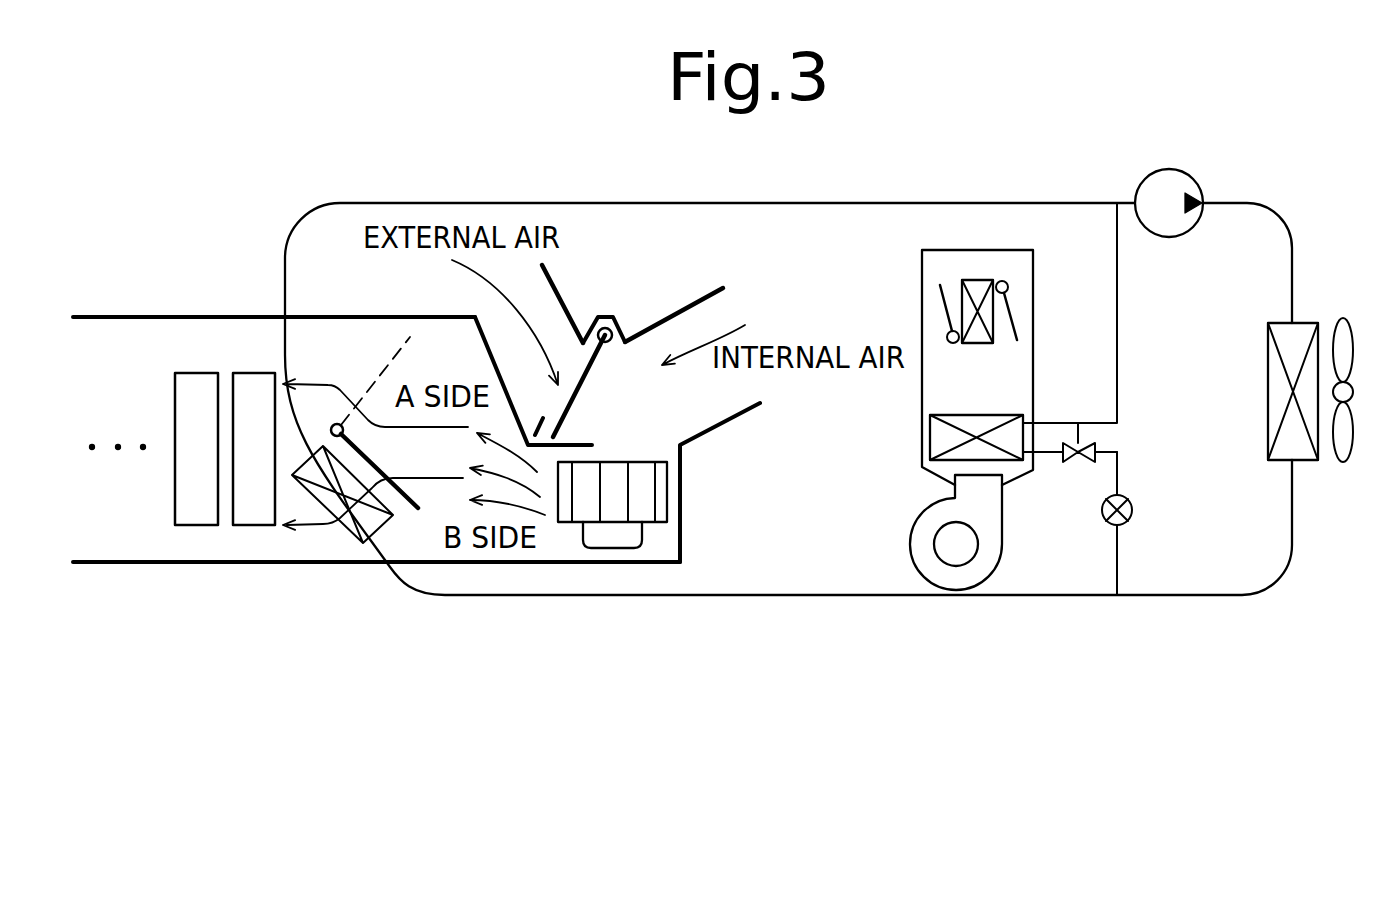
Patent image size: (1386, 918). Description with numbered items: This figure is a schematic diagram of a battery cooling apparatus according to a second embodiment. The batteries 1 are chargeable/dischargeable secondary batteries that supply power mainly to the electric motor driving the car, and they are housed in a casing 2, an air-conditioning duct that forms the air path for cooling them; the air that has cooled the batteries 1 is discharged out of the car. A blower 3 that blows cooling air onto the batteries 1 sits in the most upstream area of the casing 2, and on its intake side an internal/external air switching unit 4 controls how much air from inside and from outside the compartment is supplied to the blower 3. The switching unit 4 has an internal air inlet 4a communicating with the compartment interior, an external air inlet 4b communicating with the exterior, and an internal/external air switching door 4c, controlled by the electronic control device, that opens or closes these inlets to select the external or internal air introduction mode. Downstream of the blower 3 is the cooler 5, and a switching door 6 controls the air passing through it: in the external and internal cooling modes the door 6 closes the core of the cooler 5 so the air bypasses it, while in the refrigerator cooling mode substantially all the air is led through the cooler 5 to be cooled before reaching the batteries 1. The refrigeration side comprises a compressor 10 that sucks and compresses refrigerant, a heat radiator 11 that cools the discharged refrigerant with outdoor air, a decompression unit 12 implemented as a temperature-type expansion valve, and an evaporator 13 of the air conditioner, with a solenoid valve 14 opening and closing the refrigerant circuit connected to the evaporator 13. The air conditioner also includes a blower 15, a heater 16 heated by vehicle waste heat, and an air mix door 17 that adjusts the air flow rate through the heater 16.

The batteries 1 is at (278, 568).
The casing 2 is at (525, 600).
The blower 3 is at (617, 548).
The internal/external air switching unit 4 is at (591, 326).
The internal air inlet 4a is at (715, 318).
The external air inlet 4b is at (493, 307).
The internal/external air switching door 4c is at (587, 325).
The cooler 5 is at (348, 532).
The switching door 6 is at (380, 478).
The compressor 10 is at (1192, 173).
The heat radiator 11 is at (1302, 322).
The decompression unit 12 is at (1073, 462).
The evaporator 13 is at (997, 412).
The solenoid valve 14 is at (1130, 503).
The blower 15 is at (1003, 543).
The heater 16 is at (975, 278).
The air mix door 17 is at (937, 295).